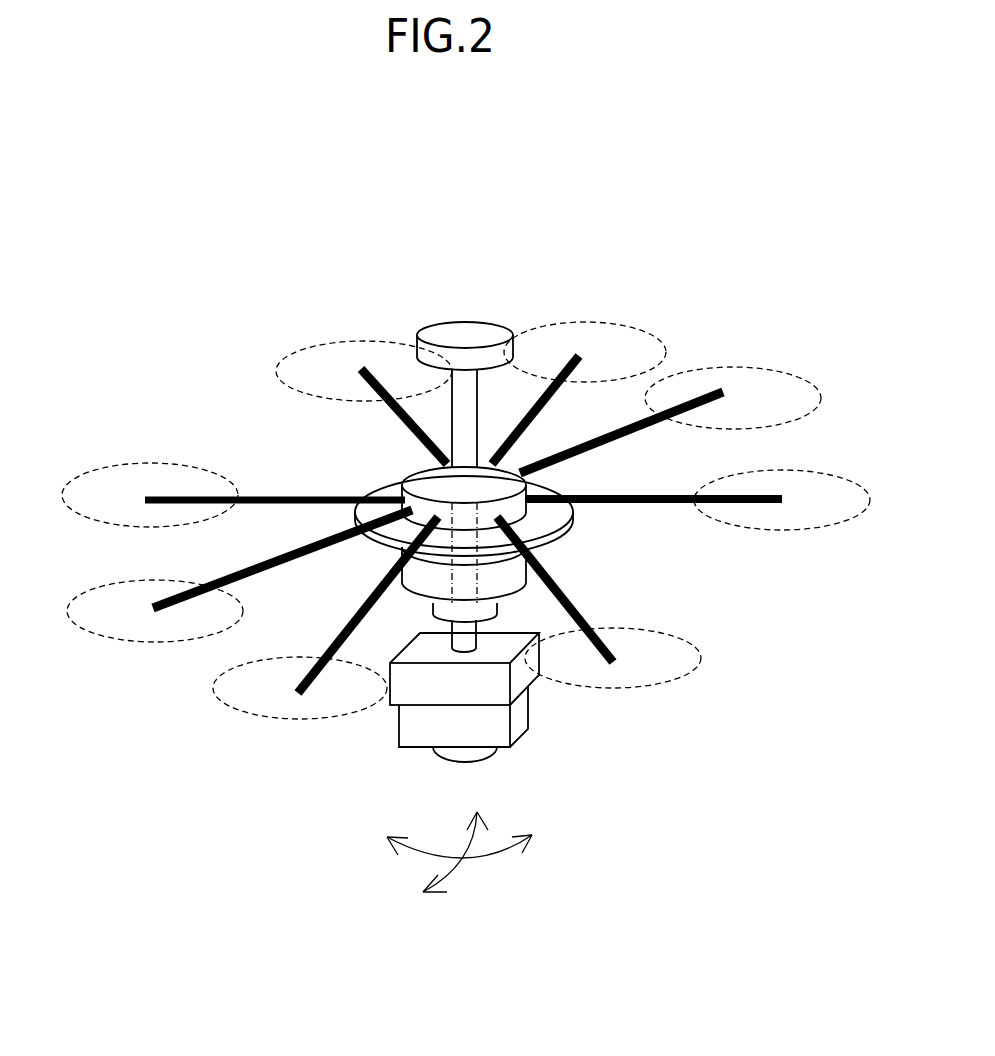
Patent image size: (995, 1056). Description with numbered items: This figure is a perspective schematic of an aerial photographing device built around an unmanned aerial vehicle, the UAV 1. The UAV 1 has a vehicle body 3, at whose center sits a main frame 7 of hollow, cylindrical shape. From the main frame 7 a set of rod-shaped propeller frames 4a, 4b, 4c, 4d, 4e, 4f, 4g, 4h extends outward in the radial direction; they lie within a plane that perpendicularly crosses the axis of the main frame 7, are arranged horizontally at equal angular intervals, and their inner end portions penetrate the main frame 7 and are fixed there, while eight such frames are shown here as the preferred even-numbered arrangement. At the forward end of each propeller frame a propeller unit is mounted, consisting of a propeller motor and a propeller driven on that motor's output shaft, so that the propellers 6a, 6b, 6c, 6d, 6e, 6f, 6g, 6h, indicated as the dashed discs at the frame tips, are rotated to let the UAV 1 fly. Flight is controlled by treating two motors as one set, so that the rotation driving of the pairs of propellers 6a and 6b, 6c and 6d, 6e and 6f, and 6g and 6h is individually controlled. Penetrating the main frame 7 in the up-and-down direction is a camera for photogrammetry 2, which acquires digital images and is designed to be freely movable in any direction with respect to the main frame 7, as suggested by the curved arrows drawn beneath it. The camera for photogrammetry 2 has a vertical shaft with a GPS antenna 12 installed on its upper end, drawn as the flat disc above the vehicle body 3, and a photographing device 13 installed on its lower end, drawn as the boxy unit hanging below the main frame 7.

The UAV 1 is at (687, 325).
The camera for photogrammetry 2 is at (387, 753).
The vehicle body 3 is at (385, 473).
The propeller frame 4a is at (183, 497).
The propeller frame 4b is at (378, 383).
The propeller frame 4c is at (570, 367).
The propeller frame 4d is at (695, 395).
The propeller frame 4e is at (670, 505).
The propeller frame 4f is at (610, 648).
The propeller frame 4g is at (362, 618).
The propeller frame 4h is at (192, 603).
The propeller 6a is at (102, 470).
The propeller 6b is at (290, 355).
The propeller 6c is at (593, 322).
The propeller 6d is at (763, 367).
The propeller 6e is at (815, 468).
The propeller 6f is at (685, 673).
The propeller 6g is at (255, 713).
The propeller 6h is at (100, 635).
The main frame 7 is at (530, 583).
The GPS antenna 12 is at (467, 330).
The photographing device 13 is at (547, 717).